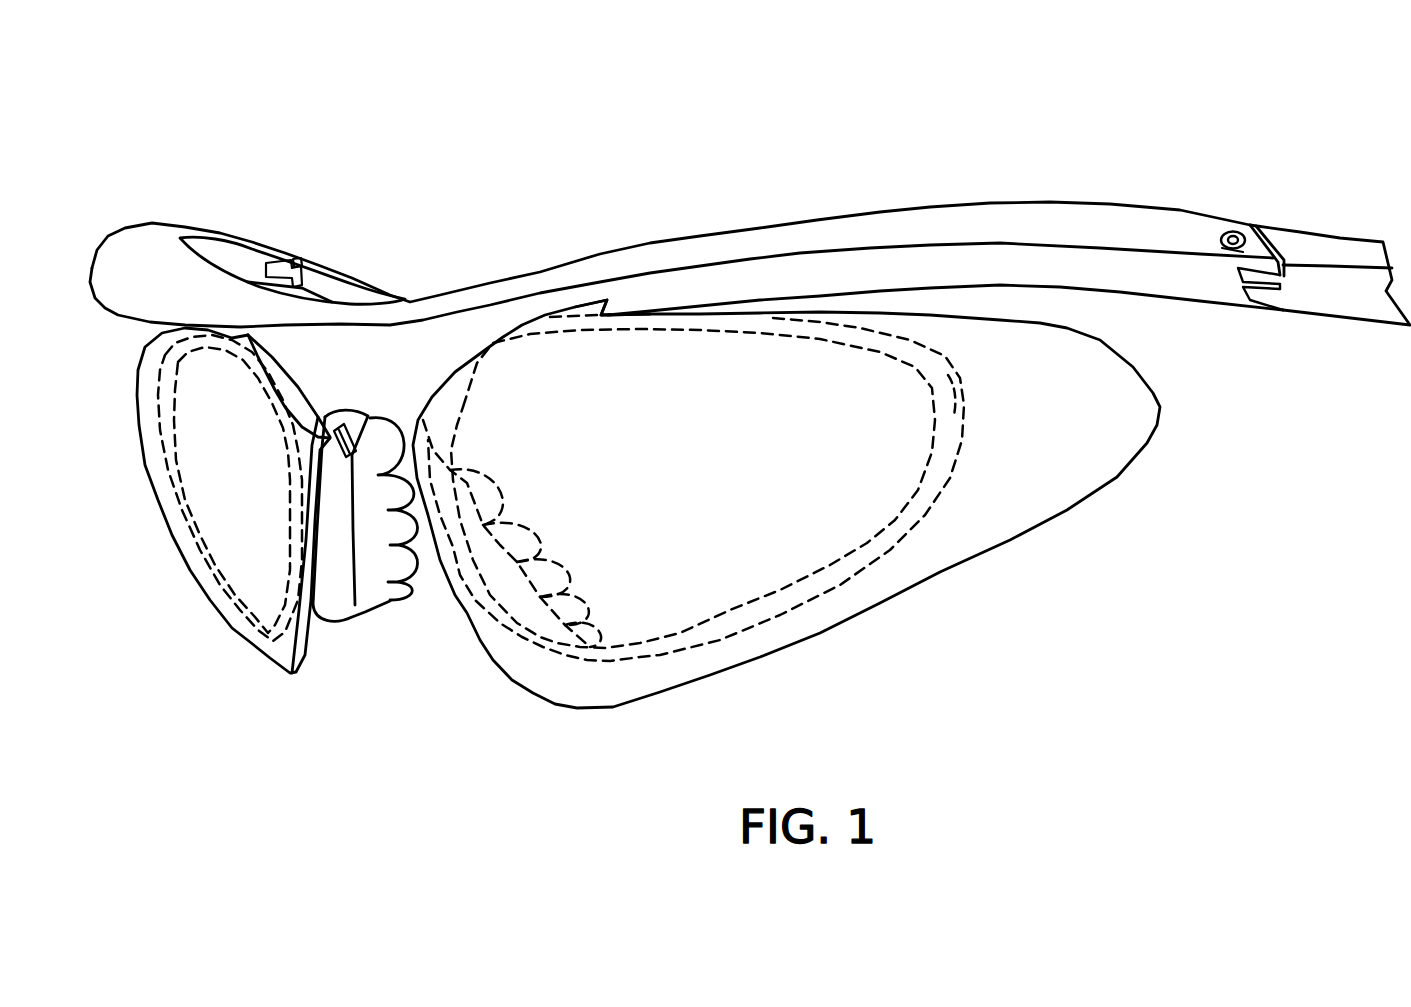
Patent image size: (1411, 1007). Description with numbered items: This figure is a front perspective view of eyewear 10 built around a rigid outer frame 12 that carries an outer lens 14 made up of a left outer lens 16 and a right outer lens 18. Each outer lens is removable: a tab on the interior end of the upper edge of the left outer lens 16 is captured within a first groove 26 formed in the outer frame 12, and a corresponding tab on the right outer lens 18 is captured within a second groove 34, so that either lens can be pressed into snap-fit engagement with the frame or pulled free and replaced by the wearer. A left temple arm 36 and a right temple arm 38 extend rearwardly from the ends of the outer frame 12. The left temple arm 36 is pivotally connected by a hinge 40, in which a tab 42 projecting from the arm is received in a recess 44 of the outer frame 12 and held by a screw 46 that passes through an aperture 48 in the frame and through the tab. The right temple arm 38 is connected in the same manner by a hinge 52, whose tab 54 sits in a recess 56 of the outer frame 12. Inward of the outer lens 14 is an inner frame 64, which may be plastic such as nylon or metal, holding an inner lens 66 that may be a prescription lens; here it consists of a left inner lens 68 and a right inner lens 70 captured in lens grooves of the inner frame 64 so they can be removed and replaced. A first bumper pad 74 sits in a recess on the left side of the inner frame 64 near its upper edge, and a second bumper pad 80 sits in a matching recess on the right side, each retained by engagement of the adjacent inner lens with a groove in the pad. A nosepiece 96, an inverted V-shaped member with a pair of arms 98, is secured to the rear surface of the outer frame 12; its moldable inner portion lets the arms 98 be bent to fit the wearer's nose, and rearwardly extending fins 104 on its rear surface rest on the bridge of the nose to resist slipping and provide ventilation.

The eyewear 10 is at (758, 147).
The outer frame 12 is at (572, 276).
The outer lens 14 is at (295, 684).
The left outer lens 16 is at (996, 527).
The right outer lens 18 is at (186, 532).
The first groove 26 is at (602, 316).
The second groove 34 is at (335, 438).
The left temple arm 36 is at (1312, 241).
The right temple arm 38 is at (373, 291).
The hinge 40 is at (1295, 181).
The tab 42 is at (1262, 290).
The recess 44 is at (1239, 274).
The screw 46 is at (1231, 231).
The aperture 48 is at (1222, 248).
The hinge 52 is at (315, 188).
The tab 54 is at (298, 260).
The recess 56 is at (280, 258).
The inner frame 64 is at (950, 487).
The inner lens 66 is at (851, 514).
The left inner lens 68 is at (771, 577).
The right inner lens 70 is at (253, 561).
The first bumper pad 74 is at (955, 393).
The second bumper pad 80 is at (162, 374).
The nosepiece 96 is at (357, 608).
The arms 98 is at (349, 558).
The fins 104 is at (405, 594).